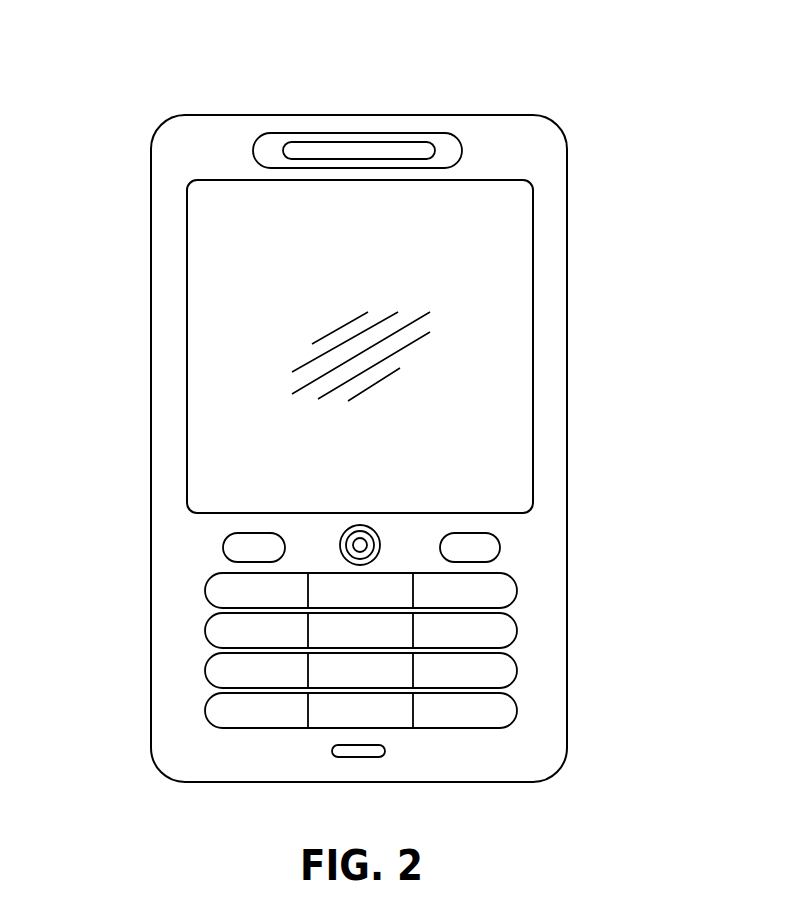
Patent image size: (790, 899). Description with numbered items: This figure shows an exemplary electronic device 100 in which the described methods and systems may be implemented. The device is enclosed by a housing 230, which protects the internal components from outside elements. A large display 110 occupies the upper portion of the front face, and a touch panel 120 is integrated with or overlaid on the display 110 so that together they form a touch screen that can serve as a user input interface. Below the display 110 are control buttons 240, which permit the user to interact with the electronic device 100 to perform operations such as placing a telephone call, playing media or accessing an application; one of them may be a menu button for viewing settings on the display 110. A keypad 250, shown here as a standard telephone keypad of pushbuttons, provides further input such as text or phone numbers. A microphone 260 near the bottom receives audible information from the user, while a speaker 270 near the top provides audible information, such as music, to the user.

The electronic device 100 is at (185, 33).
The display 110 is at (537, 395).
The touch panel 120 is at (508, 303).
The housing 230 is at (150, 158).
The control buttons 240 is at (517, 530).
The keypad 250 is at (532, 717).
The microphone 260 is at (362, 757).
The speaker 270 is at (462, 150).